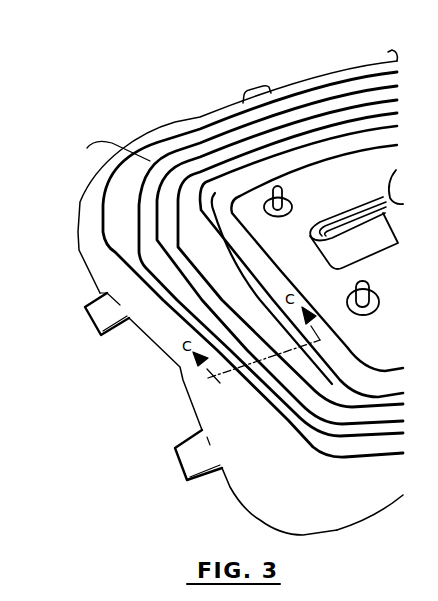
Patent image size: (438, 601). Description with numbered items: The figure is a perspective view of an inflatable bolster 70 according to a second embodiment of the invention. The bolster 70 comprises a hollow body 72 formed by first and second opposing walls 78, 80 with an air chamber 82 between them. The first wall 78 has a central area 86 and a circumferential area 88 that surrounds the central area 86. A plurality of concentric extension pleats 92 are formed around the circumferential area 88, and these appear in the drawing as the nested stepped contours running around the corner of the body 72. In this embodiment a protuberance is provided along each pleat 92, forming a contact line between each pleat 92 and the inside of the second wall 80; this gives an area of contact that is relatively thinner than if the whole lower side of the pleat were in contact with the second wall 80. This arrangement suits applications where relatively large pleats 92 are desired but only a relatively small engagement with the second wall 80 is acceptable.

The inflatable bolster 70 is at (213, 100).
The hollow body 72 is at (310, 183).
The first wall 78 is at (390, 487).
The second wall 80 is at (330, 507).
The air chamber 82 is at (377, 340).
The central area 86 is at (358, 191).
The circumferential area 88 is at (213, 198).
The extension pleats 92 is at (187, 270).